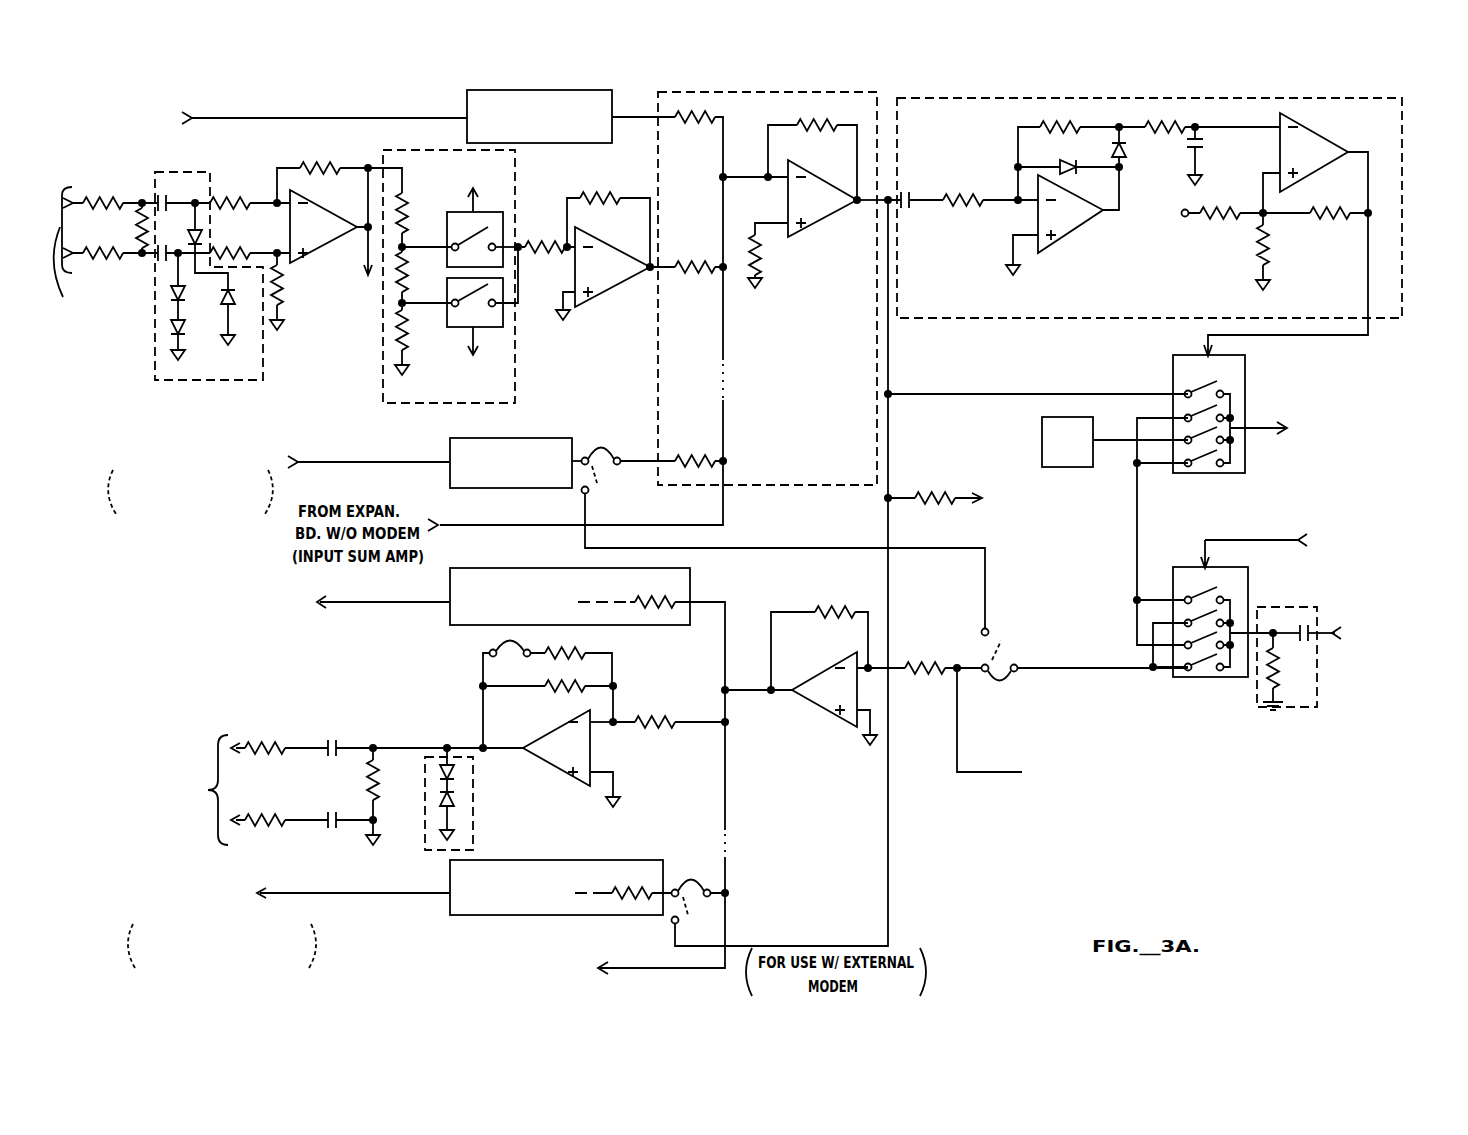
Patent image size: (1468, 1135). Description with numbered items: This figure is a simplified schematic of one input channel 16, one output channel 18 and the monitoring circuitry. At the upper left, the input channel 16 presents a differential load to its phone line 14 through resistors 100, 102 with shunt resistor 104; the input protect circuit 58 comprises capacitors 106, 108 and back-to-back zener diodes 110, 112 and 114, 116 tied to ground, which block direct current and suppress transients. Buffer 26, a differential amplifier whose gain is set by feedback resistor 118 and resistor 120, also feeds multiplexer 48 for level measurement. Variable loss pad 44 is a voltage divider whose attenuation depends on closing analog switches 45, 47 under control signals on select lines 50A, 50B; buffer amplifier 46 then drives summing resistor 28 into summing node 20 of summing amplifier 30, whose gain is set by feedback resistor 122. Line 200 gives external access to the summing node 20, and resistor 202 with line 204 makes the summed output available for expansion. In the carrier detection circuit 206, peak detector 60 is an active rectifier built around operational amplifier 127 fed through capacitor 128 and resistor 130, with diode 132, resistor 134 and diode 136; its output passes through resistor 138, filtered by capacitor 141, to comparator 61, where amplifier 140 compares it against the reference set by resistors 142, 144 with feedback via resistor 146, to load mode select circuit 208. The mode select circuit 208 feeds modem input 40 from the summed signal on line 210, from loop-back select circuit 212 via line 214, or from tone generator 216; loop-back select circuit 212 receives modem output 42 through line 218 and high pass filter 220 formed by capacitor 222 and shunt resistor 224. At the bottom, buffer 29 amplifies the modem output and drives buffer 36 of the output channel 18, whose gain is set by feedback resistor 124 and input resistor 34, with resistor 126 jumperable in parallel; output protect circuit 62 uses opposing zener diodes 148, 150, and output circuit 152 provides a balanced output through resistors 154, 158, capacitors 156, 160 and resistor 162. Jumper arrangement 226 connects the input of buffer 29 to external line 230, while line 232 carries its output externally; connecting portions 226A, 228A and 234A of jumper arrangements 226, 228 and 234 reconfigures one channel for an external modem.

The phone line 14 is at (259, 304).
The input channel 16 is at (600, 90).
The output channel 18 is at (530, 568).
The summing node 20 is at (725, 175).
The buffer amplifier 26 is at (303, 290).
The summing resistor 28 is at (690, 128).
The buffer amplifier 29 is at (819, 727).
The summing amplifier 30 is at (829, 223).
The input resistor 34 is at (655, 600).
The buffer amplifier 36 is at (460, 721).
The modem input 40 is at (1325, 429).
The modem output 42 is at (1391, 643).
The variable loss pad 44 is at (516, 380).
The analog switch 45 is at (446, 264).
The buffer amplifier 46 is at (604, 302).
The analog switch 47 is at (446, 294).
The multiplexer 48 is at (352, 275).
The low attenuation select switch 50A is at (470, 198).
The high attenuation select switch 50B is at (474, 344).
The input protect circuit 58 is at (246, 381).
The peak detector 60 is at (1083, 268).
The comparator 61 is at (1351, 136).
The output protect circuit 62 is at (474, 800).
The resistor 100 is at (80, 200).
The resistor 102 is at (97, 266).
The resistor 104 is at (138, 226).
The capacitor 106 is at (164, 198).
The capacitor 108 is at (161, 241).
The zener diode 110 is at (203, 228).
The zener diode 112 is at (235, 300).
The zener diode 114 is at (185, 293).
The zener diode 116 is at (185, 327).
The feedback resistor 118 is at (325, 167).
The resistor 120 is at (231, 198).
The feedback resistor 122 is at (823, 136).
The feedback resistor 124 is at (555, 692).
The second resistor 126 is at (553, 662).
The operational amplifier 127 is at (1084, 228).
The capacitor 128 is at (909, 192).
The resistor 130 is at (959, 192).
The diode 132 is at (1071, 160).
The resistor 134 is at (1060, 127).
The diode 136 is at (1126, 148).
The resistor 138 is at (1168, 126).
The amplifier 140 is at (1305, 178).
The capacitor 141 is at (1203, 146).
The resistor 142 is at (1222, 222).
The resistor 144 is at (1272, 252).
The resistor 146 is at (1332, 222).
The zener diode 148 is at (440, 773).
The zener diode 150 is at (440, 808).
The output circuit 152 is at (281, 725).
The resistor 154 is at (258, 760).
The capacitor 156 is at (334, 760).
The resistor 158 is at (262, 830).
The capacitor 160 is at (340, 830).
The resistor 162 is at (365, 789).
The line 200 is at (724, 522).
The resistor 202 is at (937, 492).
The line 204 is at (958, 505).
The carrier detection circuit 206 is at (1403, 113).
The mode select circuit 208 is at (1218, 474).
The line 210 is at (937, 394).
The loop-back select circuit 212 is at (1242, 567).
The line 214 is at (1138, 513).
The tone generator 216 is at (1041, 442).
The line 218 is at (1318, 628).
The high pass filter 220 is at (1296, 708).
The capacitor 222 is at (1312, 645).
The shunt resistor 224 is at (1283, 680).
The jumper arrangement 226 is at (1004, 688).
The dotted line portion 226A is at (1005, 636).
The jumper arrangement 228 is at (610, 436).
The dotted portion 228A is at (601, 486).
The line 230 is at (972, 784).
The line 232 is at (622, 968).
The jumper arrangement 234 is at (695, 861).
The portion 234A is at (780, 921).